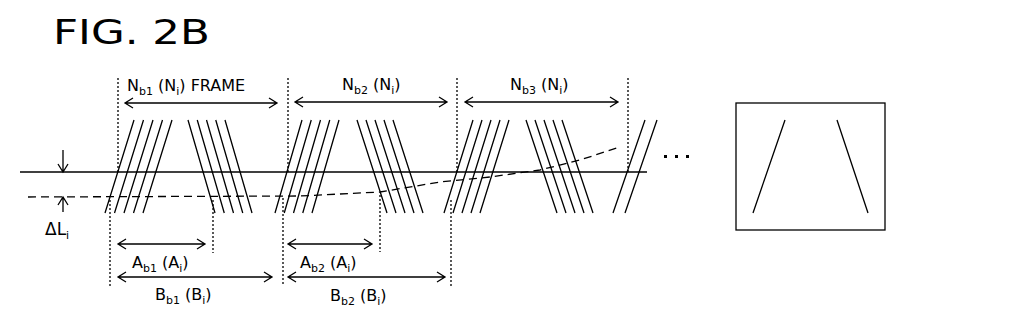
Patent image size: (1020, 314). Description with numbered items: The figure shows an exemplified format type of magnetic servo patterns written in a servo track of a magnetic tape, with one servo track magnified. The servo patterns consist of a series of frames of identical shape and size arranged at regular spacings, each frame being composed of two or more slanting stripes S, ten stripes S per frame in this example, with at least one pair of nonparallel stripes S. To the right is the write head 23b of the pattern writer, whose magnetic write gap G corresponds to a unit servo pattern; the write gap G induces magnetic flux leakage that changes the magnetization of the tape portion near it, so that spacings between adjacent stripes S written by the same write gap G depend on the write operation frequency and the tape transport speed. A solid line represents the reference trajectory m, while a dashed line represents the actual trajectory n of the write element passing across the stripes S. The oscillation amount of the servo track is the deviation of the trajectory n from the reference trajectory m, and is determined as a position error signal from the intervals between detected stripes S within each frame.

The slanting stripes S is at (127, 150).
The reference trajectory m is at (258, 172).
The trajectory n is at (423, 180).
The write gap G is at (850, 160).
The write head 23b is at (810, 181).